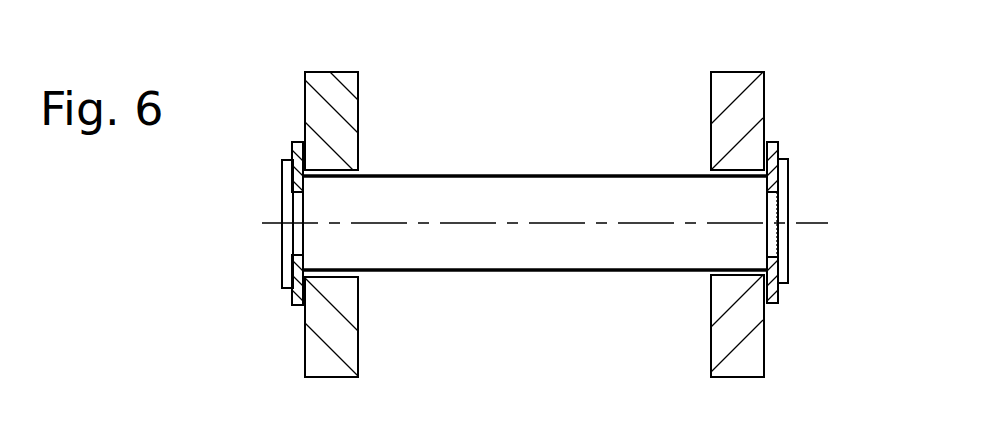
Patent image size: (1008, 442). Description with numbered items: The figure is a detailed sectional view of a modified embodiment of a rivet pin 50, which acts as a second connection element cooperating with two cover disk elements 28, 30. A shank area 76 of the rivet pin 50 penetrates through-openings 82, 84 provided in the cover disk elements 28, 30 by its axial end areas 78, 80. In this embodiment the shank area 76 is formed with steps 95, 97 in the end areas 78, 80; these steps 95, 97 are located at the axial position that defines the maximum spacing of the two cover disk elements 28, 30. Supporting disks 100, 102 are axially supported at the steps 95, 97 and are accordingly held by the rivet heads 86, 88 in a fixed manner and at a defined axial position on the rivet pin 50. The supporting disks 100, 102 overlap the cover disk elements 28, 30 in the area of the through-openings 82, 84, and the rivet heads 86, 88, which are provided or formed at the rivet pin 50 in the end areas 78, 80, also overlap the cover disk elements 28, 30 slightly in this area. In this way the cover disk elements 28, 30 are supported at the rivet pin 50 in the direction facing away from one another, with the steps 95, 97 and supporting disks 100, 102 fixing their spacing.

The cover disk element 28 is at (336, 338).
The cover disk element 30 is at (745, 347).
The rivet pin 50 is at (520, 173).
The shank area 76 is at (550, 250).
The axial end area 78 is at (321, 221).
The axial end area 80 is at (830, 205).
The through-opening 82 is at (322, 170).
The through-opening 84 is at (727, 173).
The rivet head 86 is at (286, 252).
The rivet head 88 is at (787, 193).
The step 95 is at (303, 188).
The step 97 is at (772, 263).
The supporting disk 100 is at (292, 307).
The supporting disk 102 is at (775, 305).